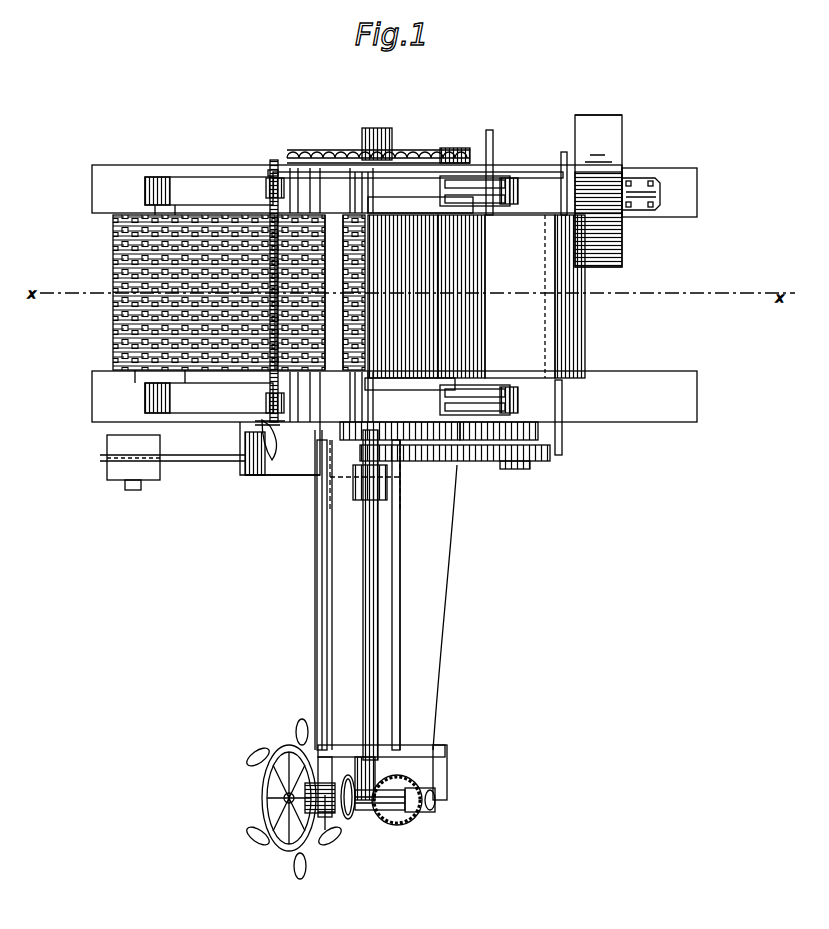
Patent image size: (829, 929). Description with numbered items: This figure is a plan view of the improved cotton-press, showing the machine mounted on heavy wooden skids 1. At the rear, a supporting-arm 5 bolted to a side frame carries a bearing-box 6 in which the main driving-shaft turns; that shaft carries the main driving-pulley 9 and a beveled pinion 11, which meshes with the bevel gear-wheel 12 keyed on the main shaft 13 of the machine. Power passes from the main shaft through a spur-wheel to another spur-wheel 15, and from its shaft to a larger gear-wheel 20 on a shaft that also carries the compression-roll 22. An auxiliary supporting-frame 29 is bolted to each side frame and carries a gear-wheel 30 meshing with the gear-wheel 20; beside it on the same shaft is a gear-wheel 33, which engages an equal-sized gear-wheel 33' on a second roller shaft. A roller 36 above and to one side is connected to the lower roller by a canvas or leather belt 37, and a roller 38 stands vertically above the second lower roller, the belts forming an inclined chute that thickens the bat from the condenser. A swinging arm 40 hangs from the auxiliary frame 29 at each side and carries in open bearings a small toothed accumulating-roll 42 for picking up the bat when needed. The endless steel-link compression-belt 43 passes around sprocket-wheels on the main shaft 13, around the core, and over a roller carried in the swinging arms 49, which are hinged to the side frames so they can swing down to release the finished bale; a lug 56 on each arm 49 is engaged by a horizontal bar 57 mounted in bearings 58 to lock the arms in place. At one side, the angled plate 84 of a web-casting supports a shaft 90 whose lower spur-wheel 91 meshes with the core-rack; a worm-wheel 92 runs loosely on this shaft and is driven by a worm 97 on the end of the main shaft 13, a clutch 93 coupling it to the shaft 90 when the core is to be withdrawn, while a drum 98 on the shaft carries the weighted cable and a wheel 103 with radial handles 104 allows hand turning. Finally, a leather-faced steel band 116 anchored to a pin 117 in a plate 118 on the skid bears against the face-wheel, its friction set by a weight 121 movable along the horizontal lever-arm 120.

The skid 1 is at (402, 293).
The supporting-arm 5 is at (556, 183).
The bearing-box 6 is at (650, 194).
The main driving-pulley 9 is at (606, 129).
The beveled pinion 11 is at (470, 150).
The bevel gear-wheel 12 is at (420, 152).
The main shaft 13 is at (365, 548).
The spur-wheel 15 is at (330, 465).
The gear-wheel 20 is at (447, 462).
The compression-roll 22 is at (437, 428).
The auxiliary supporting-frame 29 is at (508, 180).
The gear-wheel 30 is at (550, 452).
The gear-wheel 33 is at (535, 434).
The gear-wheel 33' is at (519, 479).
The roller 36 is at (582, 283).
The belt 37 is at (535, 296).
The roller 38 is at (466, 296).
The swinging arm 40 is at (410, 207).
The accumulating-roll 42 is at (383, 345).
The compression-belt 43 is at (224, 294).
The swinging arm 49 is at (209, 295).
The lug 56 is at (266, 395).
The horizontal bar 57 is at (268, 172).
The bearing 58 is at (280, 170).
The plate 84 is at (350, 625).
The shaft 90 is at (330, 830).
The spur-wheel 91 is at (300, 815).
The worm-wheel 92 is at (400, 818).
The clutch 93 is at (383, 781).
The worm 97 is at (375, 810).
The drum 98 is at (350, 815).
The wheel 103 is at (266, 805).
The radial handle 104 is at (250, 838).
The steel band 116 is at (272, 453).
The pin 117 is at (248, 472).
The plate 118 is at (248, 430).
The lever-arm 120 is at (195, 460).
The weight 121 is at (133, 462).